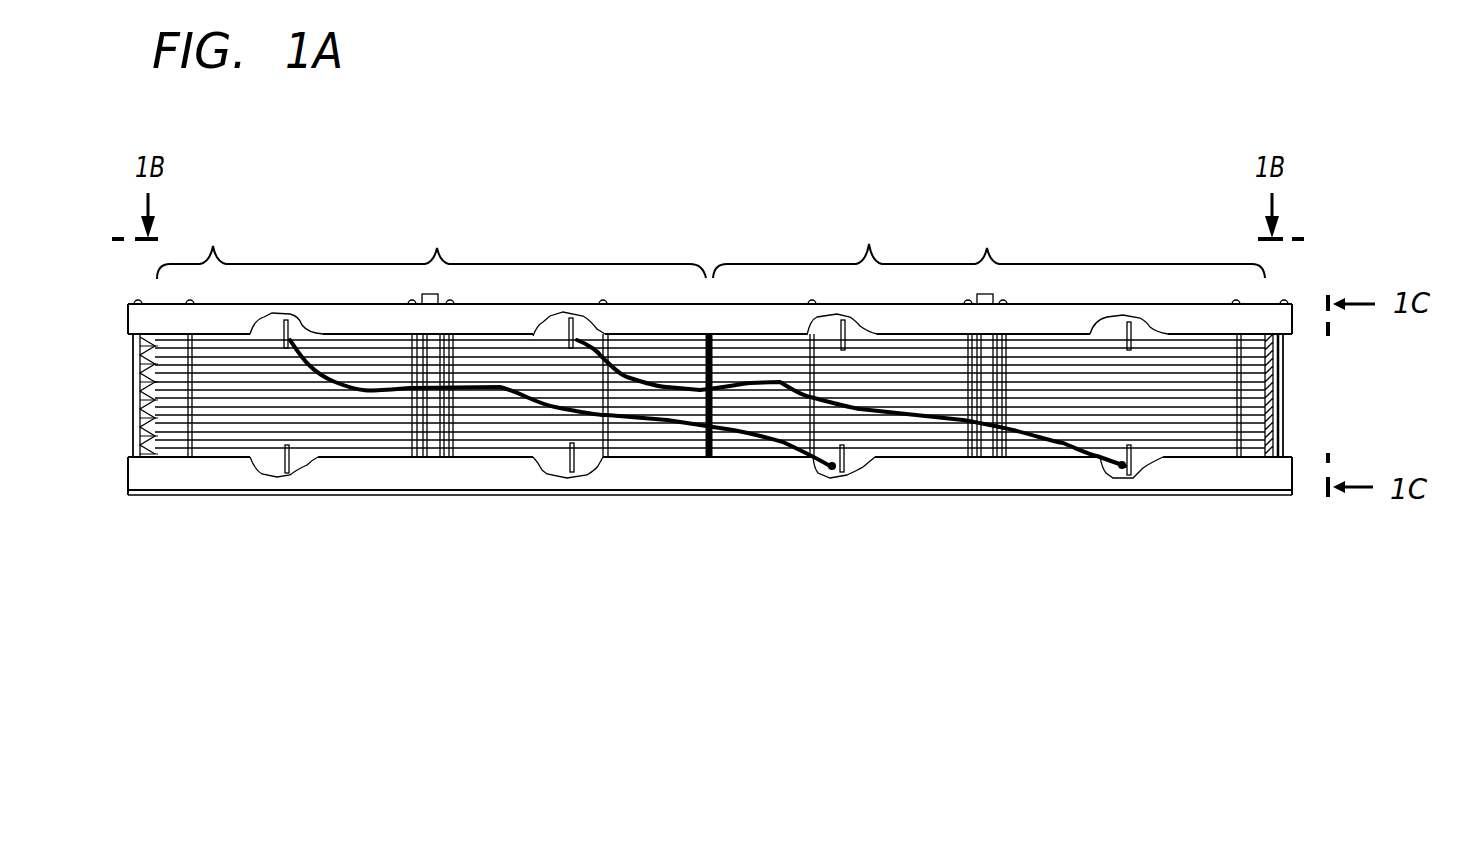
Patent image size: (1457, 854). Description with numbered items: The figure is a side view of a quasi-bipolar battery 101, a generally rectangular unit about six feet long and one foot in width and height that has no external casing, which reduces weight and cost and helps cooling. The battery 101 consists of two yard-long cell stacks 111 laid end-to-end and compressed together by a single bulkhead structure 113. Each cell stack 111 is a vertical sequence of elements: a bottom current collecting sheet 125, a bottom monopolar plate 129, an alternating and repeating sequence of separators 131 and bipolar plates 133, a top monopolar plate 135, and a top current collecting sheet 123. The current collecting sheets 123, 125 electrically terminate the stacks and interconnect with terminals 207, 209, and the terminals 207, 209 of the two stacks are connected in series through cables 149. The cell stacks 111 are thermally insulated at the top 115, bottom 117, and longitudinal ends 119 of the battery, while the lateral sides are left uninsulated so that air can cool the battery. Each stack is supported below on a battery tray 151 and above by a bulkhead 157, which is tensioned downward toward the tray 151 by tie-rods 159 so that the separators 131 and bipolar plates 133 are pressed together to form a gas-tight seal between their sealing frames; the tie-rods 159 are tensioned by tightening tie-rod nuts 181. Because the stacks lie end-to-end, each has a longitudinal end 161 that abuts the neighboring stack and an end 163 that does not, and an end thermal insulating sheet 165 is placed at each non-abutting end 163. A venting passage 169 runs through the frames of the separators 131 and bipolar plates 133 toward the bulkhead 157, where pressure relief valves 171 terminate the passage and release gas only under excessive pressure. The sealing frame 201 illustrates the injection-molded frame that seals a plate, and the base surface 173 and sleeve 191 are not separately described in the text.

The battery 101 is at (874, 171).
The cell stack 111 is at (515, 513).
The bulkhead structure 113 is at (1270, 298).
The top 115 is at (563, 302).
The bottom 117 is at (327, 502).
The longitudinal ends 119 is at (80, 522).
The top current collecting sheet 123 is at (283, 317).
The bottom current collecting sheet 125 is at (280, 477).
The bottom monopolar plate 129 is at (138, 457).
The separator 131 is at (146, 362).
The bipolar plate 133 is at (148, 381).
The top monopolar plate 135 is at (128, 304).
The cables 149 is at (333, 367).
The battery tray 151 is at (1277, 487).
The bulkhead 157 is at (662, 260).
The tie-rods 159 is at (183, 418).
The longitudinal end 161 is at (712, 417).
The end 163 is at (127, 461).
The end thermal insulating sheets 165 is at (135, 334).
The venting passage 169 is at (755, 414).
The support rod sleeve 191 is at (433, 378).
The pressure relief valves 171 is at (430, 300).
The base surface 173 is at (228, 497).
The tie-rod nuts 181 is at (190, 302).
The rubber sealing frame 201 is at (598, 522).
The terminal 207 is at (1120, 465).
The terminal 209 is at (1097, 337).